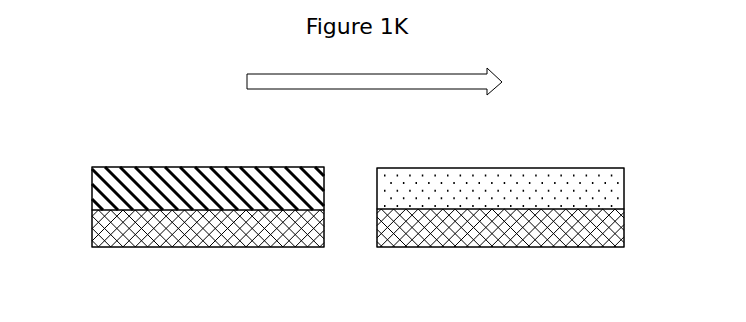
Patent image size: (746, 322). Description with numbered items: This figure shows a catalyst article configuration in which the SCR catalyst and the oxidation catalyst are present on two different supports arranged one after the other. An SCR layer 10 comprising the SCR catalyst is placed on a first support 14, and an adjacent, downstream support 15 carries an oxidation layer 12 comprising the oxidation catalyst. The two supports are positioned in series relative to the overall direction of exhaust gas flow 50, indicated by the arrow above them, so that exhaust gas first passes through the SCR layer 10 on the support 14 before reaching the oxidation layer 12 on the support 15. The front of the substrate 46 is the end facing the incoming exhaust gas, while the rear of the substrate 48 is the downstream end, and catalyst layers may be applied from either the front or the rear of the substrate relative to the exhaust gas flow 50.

The SCR layer 10 is at (143, 165).
The oxidation layer 12 is at (398, 178).
The support 14 is at (302, 248).
The downstream support 15 is at (600, 247).
The front of the substrate 46 is at (92, 222).
The rear of the substrate 48 is at (625, 226).
The direction of exhaust gas flow 50 is at (418, 80).